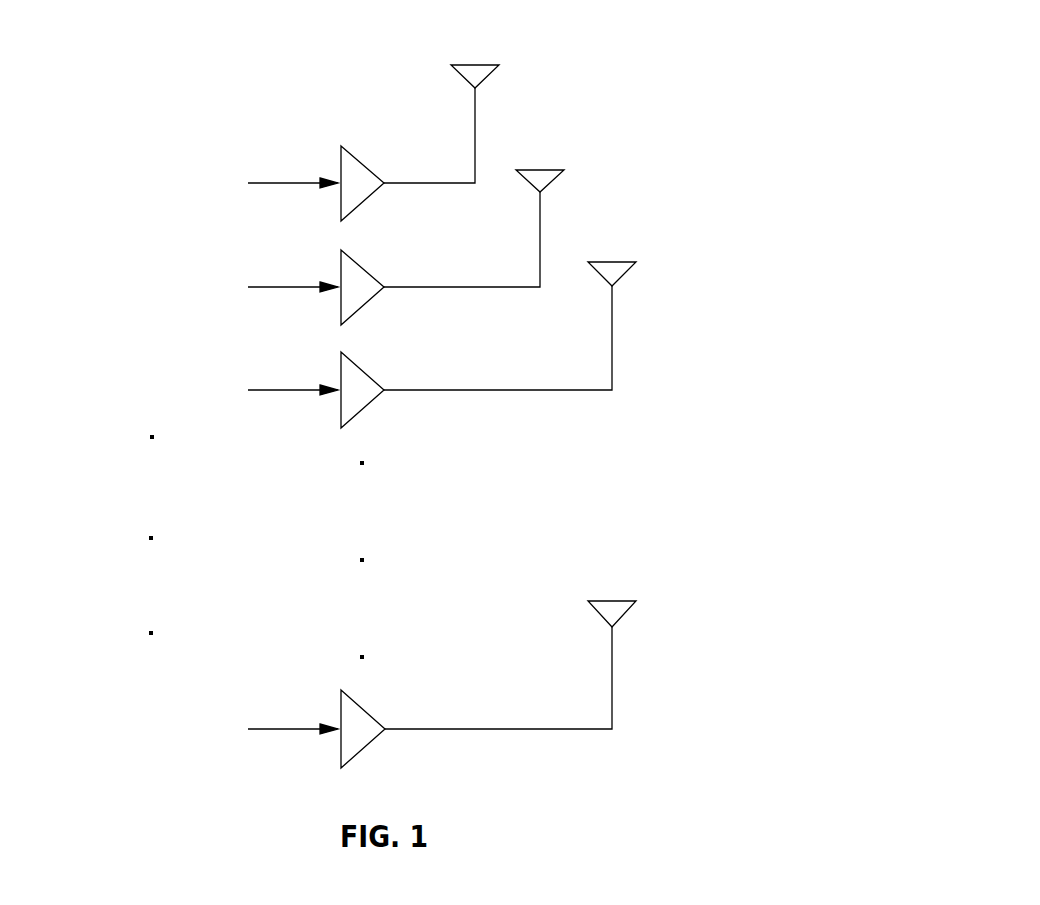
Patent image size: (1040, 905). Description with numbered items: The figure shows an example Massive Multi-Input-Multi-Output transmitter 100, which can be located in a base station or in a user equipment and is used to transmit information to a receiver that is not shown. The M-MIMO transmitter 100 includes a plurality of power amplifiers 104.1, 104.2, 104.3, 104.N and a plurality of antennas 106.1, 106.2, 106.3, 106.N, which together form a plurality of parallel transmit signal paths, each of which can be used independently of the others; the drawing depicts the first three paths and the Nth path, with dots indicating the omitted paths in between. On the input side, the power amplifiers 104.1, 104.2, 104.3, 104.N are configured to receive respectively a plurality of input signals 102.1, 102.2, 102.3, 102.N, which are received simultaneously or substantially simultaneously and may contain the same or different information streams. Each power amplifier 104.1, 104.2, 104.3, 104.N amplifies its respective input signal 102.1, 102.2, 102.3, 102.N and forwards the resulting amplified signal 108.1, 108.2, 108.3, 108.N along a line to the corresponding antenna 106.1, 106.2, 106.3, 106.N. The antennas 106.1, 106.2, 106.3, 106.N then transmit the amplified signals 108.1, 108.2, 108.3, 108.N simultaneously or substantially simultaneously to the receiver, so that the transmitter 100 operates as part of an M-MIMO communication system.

The M-MIMO transmitter 100 is at (1010, 60).
The input signal 102.1 is at (272, 183).
The input signal 102.2 is at (274, 287).
The input signal 102.3 is at (274, 390).
The input signal 102.N is at (280, 729).
The power amplifier 104.1 is at (363, 165).
The power amplifier 104.2 is at (364, 270).
The power amplifier 104.3 is at (364, 372).
The power amplifier 104.N is at (364, 710).
The antenna 106.1 is at (474, 65).
The antenna 106.2 is at (542, 170).
The antenna 106.3 is at (612, 262).
The antenna 106.N is at (612, 601).
The amplified signal 108.1 is at (443, 183).
The amplified signal 108.2 is at (511, 287).
The amplified signal 108.3 is at (517, 390).
The amplified signal 108.N is at (517, 729).